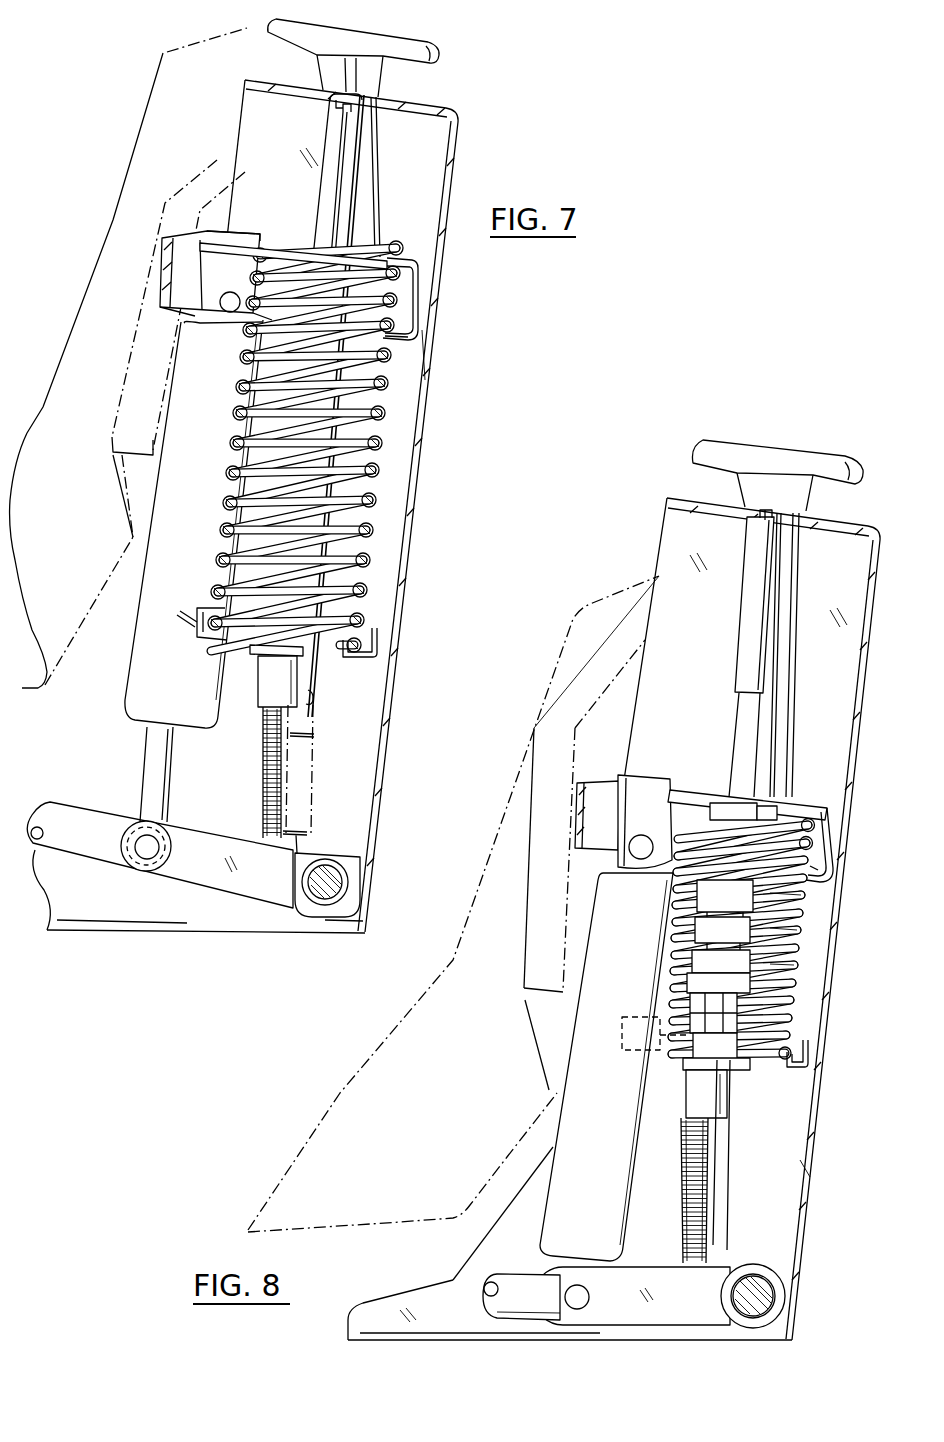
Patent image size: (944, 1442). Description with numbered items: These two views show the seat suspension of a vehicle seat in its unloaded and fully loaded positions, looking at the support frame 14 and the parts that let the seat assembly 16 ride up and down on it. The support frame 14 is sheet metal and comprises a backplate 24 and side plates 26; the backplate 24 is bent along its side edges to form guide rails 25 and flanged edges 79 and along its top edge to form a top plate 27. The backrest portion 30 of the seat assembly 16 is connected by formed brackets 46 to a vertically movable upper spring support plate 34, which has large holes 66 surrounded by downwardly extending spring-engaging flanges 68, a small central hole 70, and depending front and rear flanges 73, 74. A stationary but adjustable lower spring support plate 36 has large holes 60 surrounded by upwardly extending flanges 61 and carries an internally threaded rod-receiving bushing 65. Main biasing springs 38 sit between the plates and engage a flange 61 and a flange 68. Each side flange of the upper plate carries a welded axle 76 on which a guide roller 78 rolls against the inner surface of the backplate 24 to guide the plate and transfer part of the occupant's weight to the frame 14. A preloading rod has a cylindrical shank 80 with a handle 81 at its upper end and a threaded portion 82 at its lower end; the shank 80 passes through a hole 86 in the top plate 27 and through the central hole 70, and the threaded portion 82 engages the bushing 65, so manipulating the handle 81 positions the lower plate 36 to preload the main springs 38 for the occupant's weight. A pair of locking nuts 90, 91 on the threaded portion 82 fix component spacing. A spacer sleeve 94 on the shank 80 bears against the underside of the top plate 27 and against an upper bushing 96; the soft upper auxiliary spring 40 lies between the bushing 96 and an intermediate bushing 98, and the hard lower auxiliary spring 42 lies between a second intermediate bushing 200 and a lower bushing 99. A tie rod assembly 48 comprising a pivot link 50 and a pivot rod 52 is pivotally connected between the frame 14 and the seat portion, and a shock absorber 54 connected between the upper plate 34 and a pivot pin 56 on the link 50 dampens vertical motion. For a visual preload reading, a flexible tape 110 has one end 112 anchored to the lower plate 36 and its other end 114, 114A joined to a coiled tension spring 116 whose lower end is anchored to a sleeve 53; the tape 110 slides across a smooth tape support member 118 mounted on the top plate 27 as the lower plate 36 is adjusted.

In FIG. 7, the support frame 14 is at (372, 498).
In FIG. 8, the support frame 14 is at (774, 911).
In FIG. 7, the seat assembly 16 is at (128, 358).
In FIG. 8, the seat assembly 16 is at (453, 904).
In FIG. 7, the backplate 24 is at (372, 498).
In FIG. 8, the backplate 24 is at (770, 911).
In FIG. 7, the guide rails 25 is at (432, 173).
In FIG. 8, the guide rails 25 is at (803, 583).
In FIG. 7, the side plates 26 is at (77, 917).
In FIG. 8, the side plates 26 is at (440, 1337).
In FIG. 7, the top plate 27 is at (422, 99).
In FIG. 8, the top plate 27 is at (850, 518).
In FIG. 7, the backrest portion 30 is at (118, 192).
In FIG. 8, the backrest portion 30 is at (534, 728).
In FIG. 8, the upper spring support plate 34 is at (786, 832).
In FIG. 7, the lower spring support plate 36 is at (383, 633).
In FIG. 8, the lower spring support plate 36 is at (810, 1055).
In FIG. 7, the main biasing springs 38 is at (348, 446).
In FIG. 8, the main biasing springs 38 is at (788, 936).
In FIG. 8, the upper auxiliary spring 40 is at (777, 880).
In FIG. 8, the lower auxiliary spring 42 is at (773, 940).
In FIG. 7, the brackets 46 is at (130, 358).
In FIG. 8, the brackets 46 is at (545, 872).
In FIG. 7, the tie rod assembly 48 is at (98, 802).
In FIG. 8, the tie rod assembly 48 is at (521, 1297).
In FIG. 7, the pivot link 50 is at (193, 855).
In FIG. 8, the pivot link 50 is at (640, 1298).
In FIG. 7, the pivot rod 52 is at (318, 893).
In FIG. 8, the pivot rod 52 is at (755, 1318).
In FIG. 7, the sleeve 53 is at (321, 918).
In FIG. 8, the sleeve 53 is at (759, 1296).
In FIG. 7, the shock absorber 54 is at (127, 660).
In FIG. 8, the shock absorber 54 is at (550, 1142).
In FIG. 7, the pivot pin 56 is at (147, 853).
In FIG. 8, the pivot pin 56 is at (577, 1309).
In FIG. 7, the large holes 60 is at (298, 662).
In FIG. 7, the spring-engaging flange 61 is at (362, 632).
In FIG. 8, the spring-engaging flange 61 is at (773, 1042).
In FIG. 7, the rod-receiving bushing 65 is at (258, 685).
In FIG. 8, the rod-receiving bushing 65 is at (686, 1103).
In FIG. 7, the large holes 66 is at (344, 278).
In FIG. 7, the spring-engaging flange 68 is at (400, 276).
In FIG. 8, the central hole 70 is at (760, 782).
In FIG. 7, the front flange 73 is at (167, 240).
In FIG. 8, the front flange 73 is at (577, 810).
In FIG. 7, the rear flange 74 is at (420, 322).
In FIG. 7, the pin or axle 76 is at (397, 302).
In FIG. 8, the pin or axle 76 is at (813, 853).
In FIG. 7, the guide roller 78 is at (422, 356).
In FIG. 8, the guide roller 78 is at (833, 820).
In FIG. 7, the flanged edges 79 is at (373, 150).
In FIG. 8, the flanged edges 79 is at (778, 653).
In FIG. 8, the cylindrical shank 80 is at (737, 723).
In FIG. 7, the handle 81 is at (432, 43).
In FIG. 8, the handle 81 is at (850, 462).
In FIG. 7, the threaded portion 82 is at (262, 742).
In FIG. 8, the threaded portion 82 is at (684, 1170).
In FIG. 8, the hole 86 is at (763, 513).
In FIG. 8, the nut 90 is at (740, 1043).
In FIG. 8, the nut 91 is at (773, 1007).
In FIG. 7, the spacer sleeve 94 is at (312, 175).
In FIG. 8, the spacer sleeve 94 is at (730, 657).
In FIG. 8, the upper bushing 96 is at (777, 810).
In FIG. 8, the intermediate bushing 98 is at (793, 907).
In FIG. 8, the lower bushing 99 is at (793, 977).
In FIG. 7, the flexible tape 110 is at (312, 192).
In FIG. 7, the end of tape 112 is at (190, 634).
In FIG. 8, the connecting rod 114 is at (721, 1155).
In FIG. 7, the other end of tape 114A is at (369, 771).
In FIG. 7, the coiled tension spring 116 is at (313, 735).
In FIG. 7, the tape support member 118 is at (337, 115).
In FIG. 8, the intermediate bushing 200 is at (707, 903).